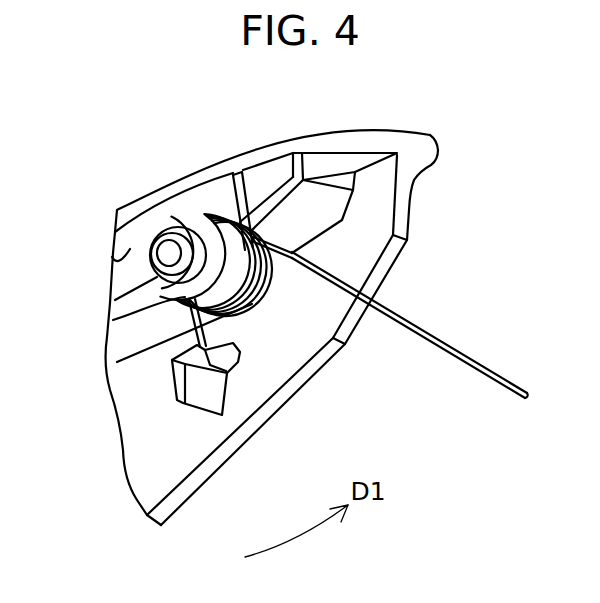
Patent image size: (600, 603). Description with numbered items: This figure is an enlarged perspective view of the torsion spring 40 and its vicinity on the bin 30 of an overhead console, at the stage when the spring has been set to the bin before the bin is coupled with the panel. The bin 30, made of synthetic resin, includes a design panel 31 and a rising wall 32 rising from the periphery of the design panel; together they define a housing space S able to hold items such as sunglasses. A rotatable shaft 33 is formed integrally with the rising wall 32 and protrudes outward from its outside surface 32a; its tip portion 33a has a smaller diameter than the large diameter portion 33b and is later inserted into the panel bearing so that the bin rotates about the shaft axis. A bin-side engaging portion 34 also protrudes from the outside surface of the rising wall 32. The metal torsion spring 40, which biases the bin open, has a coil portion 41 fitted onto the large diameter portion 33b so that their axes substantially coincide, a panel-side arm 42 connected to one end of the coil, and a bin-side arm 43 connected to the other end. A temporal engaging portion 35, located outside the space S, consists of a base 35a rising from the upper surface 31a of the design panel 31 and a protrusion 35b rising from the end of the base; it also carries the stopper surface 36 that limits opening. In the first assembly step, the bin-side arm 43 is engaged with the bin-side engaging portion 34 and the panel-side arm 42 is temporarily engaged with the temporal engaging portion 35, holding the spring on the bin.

The bin 30 is at (187, 502).
The design panel 31 is at (135, 208).
The upper surface 31a is at (110, 260).
The rising wall 32 is at (297, 382).
The outside surface 32a is at (418, 186).
The rotatable shaft 33 is at (128, 113).
The tip portion 33a is at (172, 233).
The large diameter portion 33b is at (217, 247).
The bin-side engaging portion 34 is at (228, 372).
The temporal engaging portion 35 is at (266, 200).
The base 35a is at (323, 172).
The protrusion 35b is at (272, 290).
The stopper surface 36 is at (307, 225).
The torsion spring 40 is at (113, 320).
The coil portion 41 is at (237, 320).
The panel-side arm 42 is at (503, 373).
The bin-side arm 43 is at (117, 362).
The space S is at (417, 206).